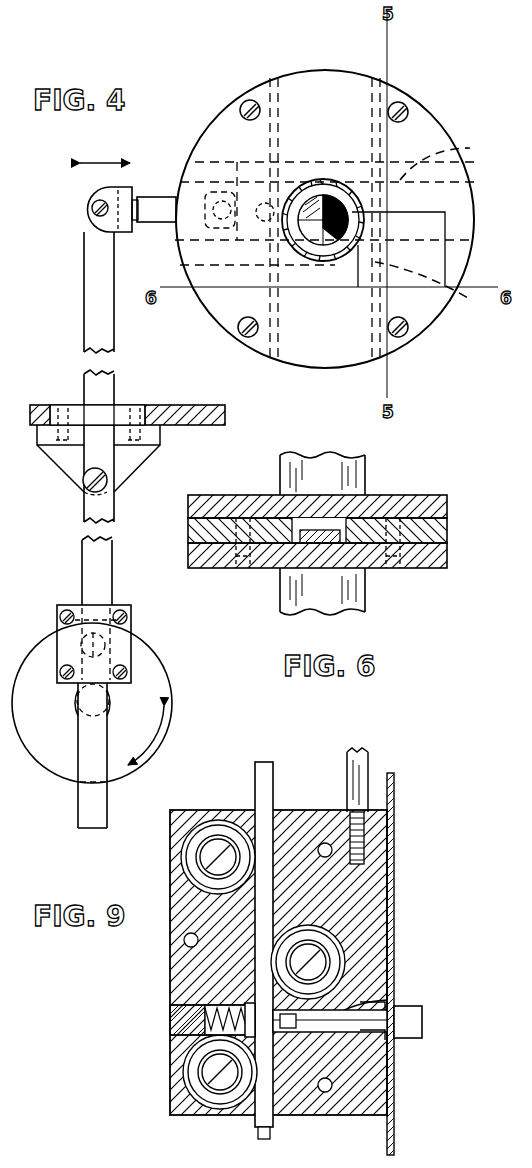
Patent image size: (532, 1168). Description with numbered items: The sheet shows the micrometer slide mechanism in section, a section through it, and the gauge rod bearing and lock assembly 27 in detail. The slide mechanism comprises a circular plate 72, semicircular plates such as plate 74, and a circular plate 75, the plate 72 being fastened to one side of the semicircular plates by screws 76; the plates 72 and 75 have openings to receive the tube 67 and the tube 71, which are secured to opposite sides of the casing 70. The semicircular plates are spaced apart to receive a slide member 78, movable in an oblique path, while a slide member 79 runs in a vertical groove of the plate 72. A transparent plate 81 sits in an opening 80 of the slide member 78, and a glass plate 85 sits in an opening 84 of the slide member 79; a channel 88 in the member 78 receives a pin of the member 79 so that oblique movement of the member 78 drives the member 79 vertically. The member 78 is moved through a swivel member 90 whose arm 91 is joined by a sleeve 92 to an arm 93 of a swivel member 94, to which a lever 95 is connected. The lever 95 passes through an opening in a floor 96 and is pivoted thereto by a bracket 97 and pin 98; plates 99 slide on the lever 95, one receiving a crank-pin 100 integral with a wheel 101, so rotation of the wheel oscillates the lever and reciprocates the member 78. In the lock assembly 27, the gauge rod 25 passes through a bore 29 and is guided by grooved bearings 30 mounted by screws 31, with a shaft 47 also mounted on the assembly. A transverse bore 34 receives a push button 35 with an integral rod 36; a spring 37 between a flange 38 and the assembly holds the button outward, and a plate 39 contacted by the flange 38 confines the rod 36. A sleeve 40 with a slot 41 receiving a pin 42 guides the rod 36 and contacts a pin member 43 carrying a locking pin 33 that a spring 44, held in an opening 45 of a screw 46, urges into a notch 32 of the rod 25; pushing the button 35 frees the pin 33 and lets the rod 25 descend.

In FIG. 9, the gauge rod 25 is at (268, 762).
In FIG. 9, the gauge rod bearing and lock mechanism 27 is at (100, 978).
In FIG. 9, the bore 29 is at (280, 810).
In FIG. 9, the bearings 30 is at (182, 857).
In FIG. 9, the screws 31 is at (212, 848).
In FIG. 9, the notch 32 is at (288, 1030).
In FIG. 9, the locking pin 33 is at (256, 1010).
In FIG. 9, the bore 34 is at (378, 1000).
In FIG. 9, the push button 35 is at (424, 1018).
In FIG. 9, the rod 36 is at (355, 1032).
In FIG. 9, the spring 37 is at (400, 1000).
In FIG. 9, the flange 38 is at (400, 1034).
In FIG. 9, the plate 39 is at (396, 800).
In FIG. 9, the sleeve 40 is at (300, 1032).
In FIG. 9, the slot 41 is at (310, 1034).
In FIG. 9, the pin 42 is at (295, 1038).
In FIG. 9, the pin member 43 is at (246, 1037).
In FIG. 9, the spring 44 is at (205, 1010).
In FIG. 9, the opening 45 is at (180, 1035).
In FIG. 9, the screw 46 is at (172, 1015).
In FIG. 9, the shaft 47 is at (360, 770).
In FIG. 6, the tube 67 is at (362, 482).
In FIG. 4, the casing 70 is at (201, 97).
In FIG. 6, the tube 71 is at (350, 606).
In FIG. 4, the circular plate 72 is at (303, 82).
In FIG. 6, the circular plate 72 is at (430, 556).
In FIG. 6, the semicircular plate 74 is at (440, 538).
In FIG. 6, the circular plate 75 is at (433, 506).
In FIG. 4, the screws 76 is at (404, 108).
In FIG. 6, the screws 76 is at (240, 568).
In FIG. 4, the slide member 78 is at (462, 150).
In FIG. 6, the slide member 79 is at (326, 560).
In FIG. 4, the opening 80 is at (456, 246).
In FIG. 6, the opening 80 is at (305, 530).
In FIG. 6, the plate 81 is at (360, 500).
In FIG. 4, the opening 84 is at (320, 228).
In FIG. 6, the opening 84 is at (302, 548).
In FIG. 4, the glass plate 85 is at (330, 232).
In FIG. 6, the glass plate 85 is at (342, 540).
In FIG. 4, the channel 88 is at (448, 262).
In FIG. 4, the swivel member 90 is at (181, 165).
In FIG. 4, the arm 91 is at (168, 254).
In FIG. 4, the sleeve 92 is at (156, 220).
In FIG. 4, the arm 93 is at (137, 194).
In FIG. 4, the swivel member 94 is at (100, 203).
In FIG. 4, the lever 95 is at (84, 282).
In FIG. 4, the floor 96 is at (190, 405).
In FIG. 4, the bracket 97 is at (150, 443).
In FIG. 4, the pin 98 is at (108, 478).
In FIG. 4, the plates 99 is at (128, 617).
In FIG. 4, the crank-pin 100 is at (110, 648).
In FIG. 4, the wheel 101 is at (160, 693).